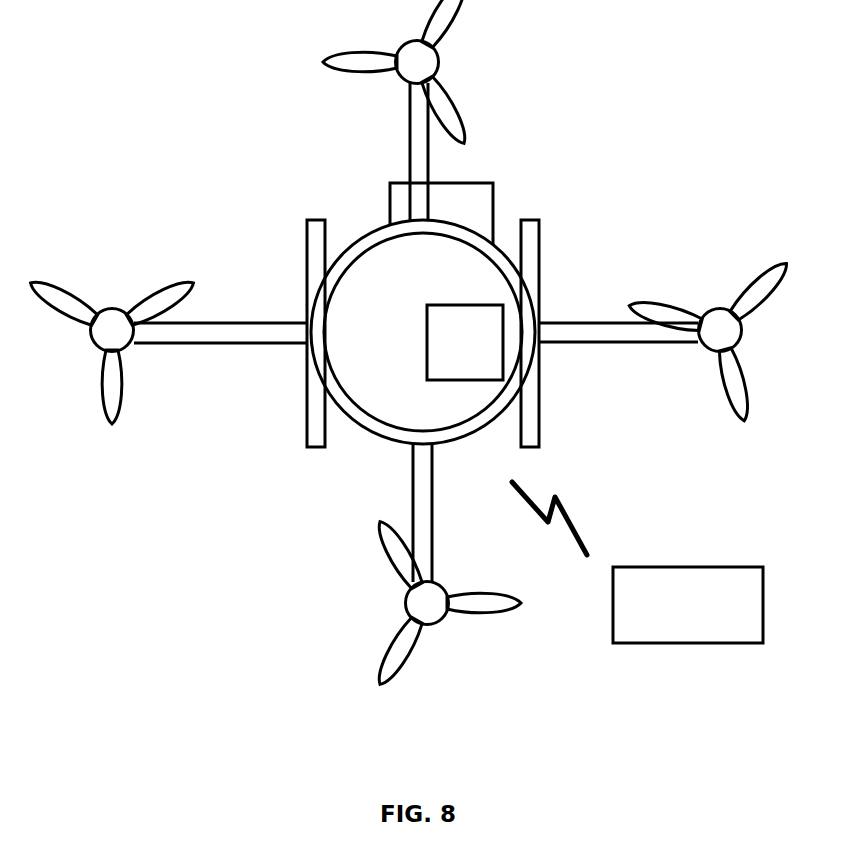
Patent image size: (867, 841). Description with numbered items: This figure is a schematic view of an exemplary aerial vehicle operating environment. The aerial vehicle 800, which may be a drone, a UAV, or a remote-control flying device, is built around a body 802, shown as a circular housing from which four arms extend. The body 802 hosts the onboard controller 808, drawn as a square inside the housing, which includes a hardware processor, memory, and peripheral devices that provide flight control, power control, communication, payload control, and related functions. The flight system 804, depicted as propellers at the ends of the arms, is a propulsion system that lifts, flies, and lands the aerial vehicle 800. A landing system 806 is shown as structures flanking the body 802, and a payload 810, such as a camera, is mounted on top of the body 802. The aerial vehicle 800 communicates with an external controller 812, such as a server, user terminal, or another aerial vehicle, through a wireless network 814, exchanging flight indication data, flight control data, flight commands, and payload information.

The aerial vehicle 800 is at (205, 176).
The body 802 is at (410, 405).
The flight system 804 is at (402, 580).
The landing system 806 is at (307, 400).
The onboard controller 808 is at (465, 357).
The payload 810 is at (483, 207).
The external controller 812 is at (642, 587).
The wireless network 814 is at (577, 510).